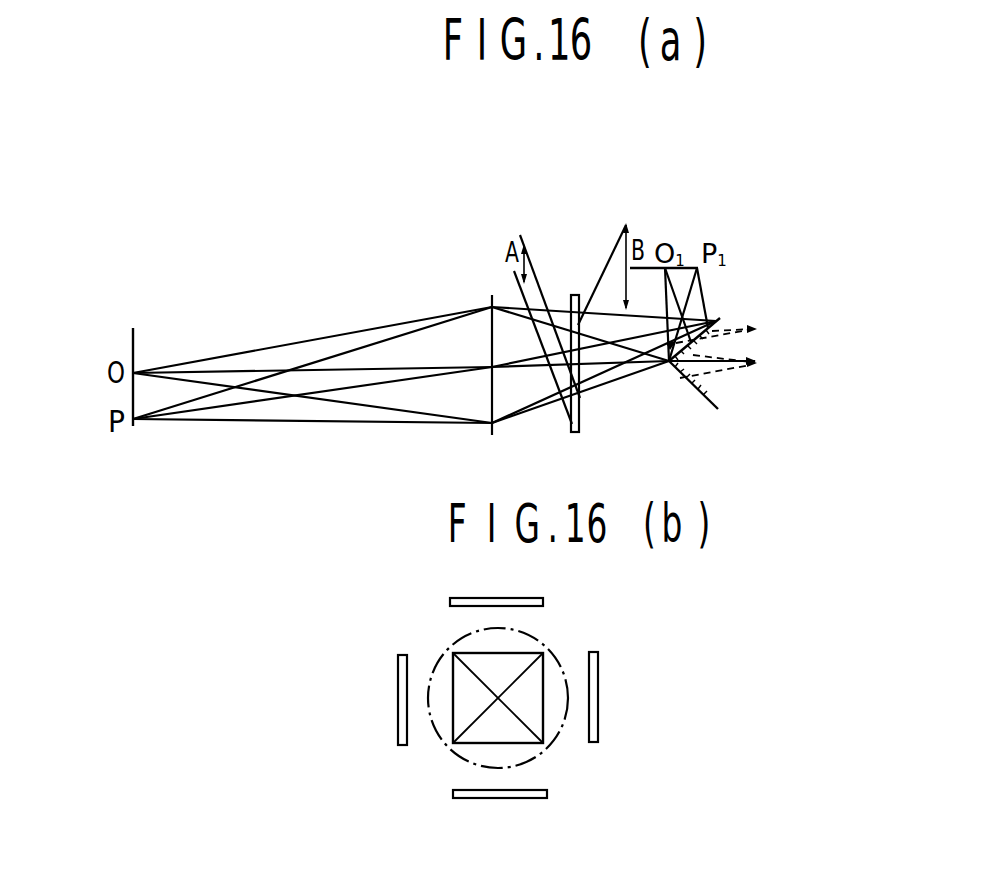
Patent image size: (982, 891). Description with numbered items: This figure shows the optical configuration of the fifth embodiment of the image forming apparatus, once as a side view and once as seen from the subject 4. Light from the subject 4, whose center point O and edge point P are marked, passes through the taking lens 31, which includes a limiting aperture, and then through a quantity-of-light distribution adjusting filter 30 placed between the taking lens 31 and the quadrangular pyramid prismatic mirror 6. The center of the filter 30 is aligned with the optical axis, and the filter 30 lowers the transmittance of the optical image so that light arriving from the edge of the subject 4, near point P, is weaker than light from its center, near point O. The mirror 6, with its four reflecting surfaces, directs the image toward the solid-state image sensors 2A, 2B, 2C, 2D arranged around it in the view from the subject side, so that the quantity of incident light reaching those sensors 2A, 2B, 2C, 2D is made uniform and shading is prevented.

In FIG. 16a, the subject 4 is at (134, 329).
In FIG. 16a, the taking lens 31 is at (492, 295).
In FIG. 16a, the quantity-of-light distribution adjusting filter 30 is at (582, 428).
The quantity-of-light distribution adjusting filter 30 is at (541, 640).
In FIG. 16a, the solid-state image sensor 2A is at (686, 268).
The solid-state image sensor 2A is at (504, 799).
The solid-state image sensor 2B is at (598, 700).
The solid-state image sensor 2C is at (398, 700).
The solid-state image sensor 2D is at (516, 598).
In FIG. 16a, the quadrangular pyramid prismatic mirror 6 is at (717, 320).
The quadrangular pyramid prismatic mirror 6 is at (538, 722).